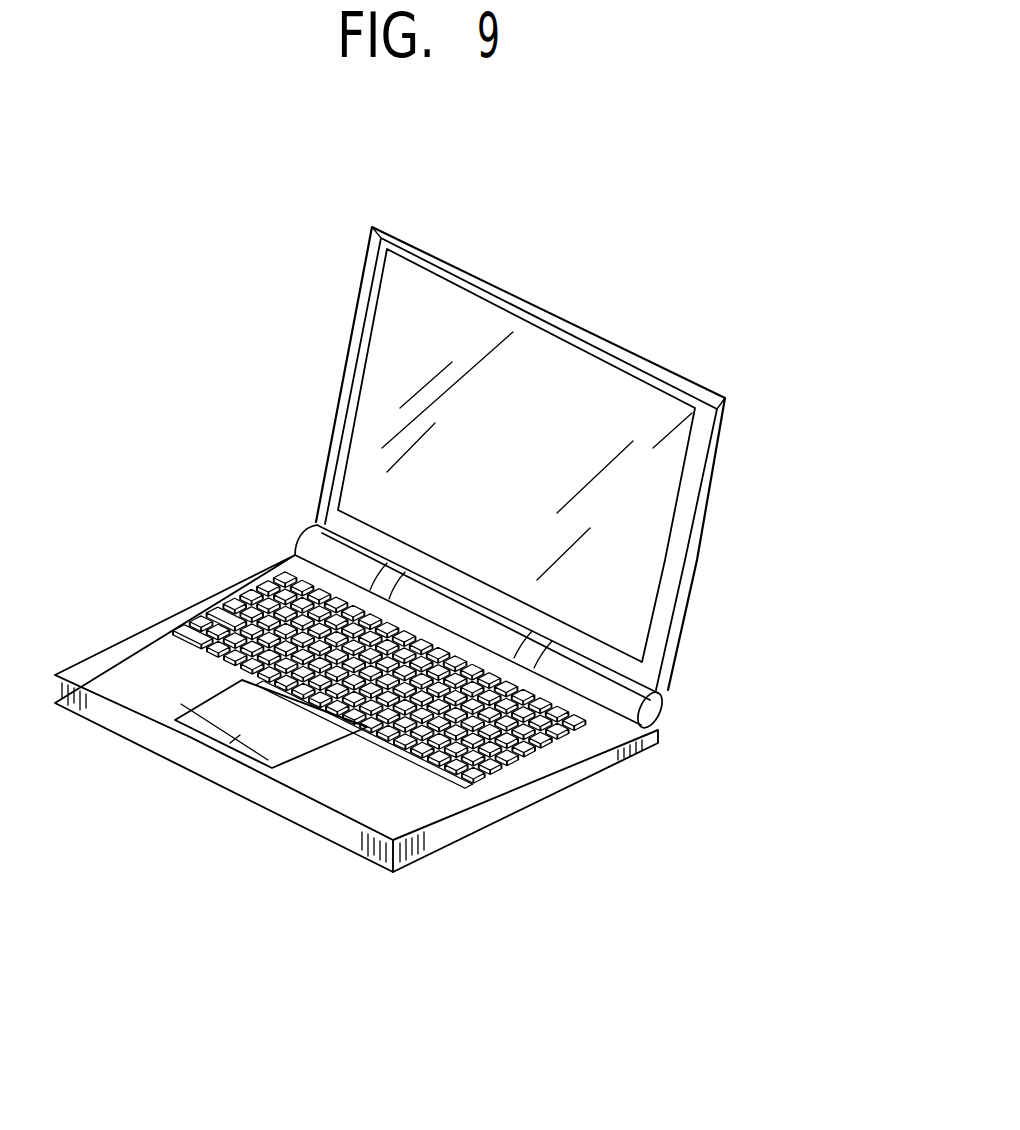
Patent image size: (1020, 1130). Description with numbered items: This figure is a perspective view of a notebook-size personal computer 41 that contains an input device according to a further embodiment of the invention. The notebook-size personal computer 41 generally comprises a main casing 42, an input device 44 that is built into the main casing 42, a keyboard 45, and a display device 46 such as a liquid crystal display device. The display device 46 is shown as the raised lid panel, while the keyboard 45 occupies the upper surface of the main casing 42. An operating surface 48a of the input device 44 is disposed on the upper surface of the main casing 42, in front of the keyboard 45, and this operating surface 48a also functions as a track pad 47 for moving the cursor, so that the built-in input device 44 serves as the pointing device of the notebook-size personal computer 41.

The notebook-size personal computer 41 is at (748, 389).
The main casing 42 is at (593, 763).
The input device 44 is at (190, 694).
The keyboard 45 is at (250, 600).
The display device 46 is at (568, 383).
The track pad 47 is at (327, 730).
The operating surface 48a is at (288, 725).